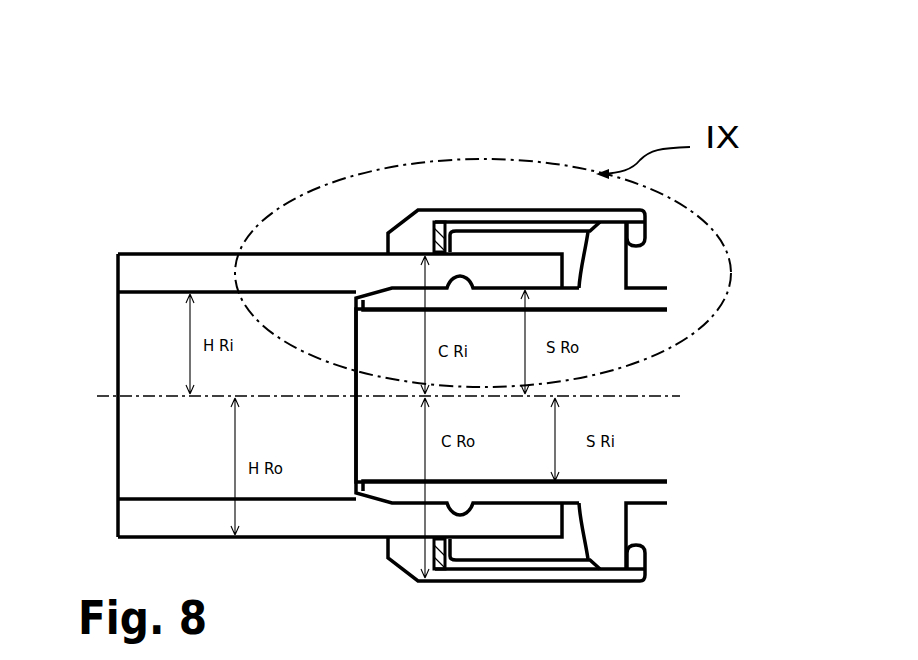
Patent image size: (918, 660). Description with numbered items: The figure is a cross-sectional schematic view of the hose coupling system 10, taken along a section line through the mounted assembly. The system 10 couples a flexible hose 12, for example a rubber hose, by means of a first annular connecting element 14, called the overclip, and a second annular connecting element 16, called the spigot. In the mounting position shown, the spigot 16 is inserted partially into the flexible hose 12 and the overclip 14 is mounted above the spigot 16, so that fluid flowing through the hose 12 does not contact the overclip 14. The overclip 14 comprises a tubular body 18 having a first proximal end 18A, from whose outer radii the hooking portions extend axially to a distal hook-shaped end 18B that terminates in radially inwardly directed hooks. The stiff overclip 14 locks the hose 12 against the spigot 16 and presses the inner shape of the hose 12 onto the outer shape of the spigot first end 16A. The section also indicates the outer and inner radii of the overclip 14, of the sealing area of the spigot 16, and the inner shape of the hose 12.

The system 10 is at (238, 198).
The flexible hose 12 is at (178, 269).
The first annular connecting element 14 is at (517, 222).
The second annular connecting element 16 is at (595, 508).
The spigot first end 16A is at (368, 497).
The tubular body 18 is at (557, 230).
The first proximal end 18A is at (432, 235).
The distal hook-shaped end 18B is at (648, 228).